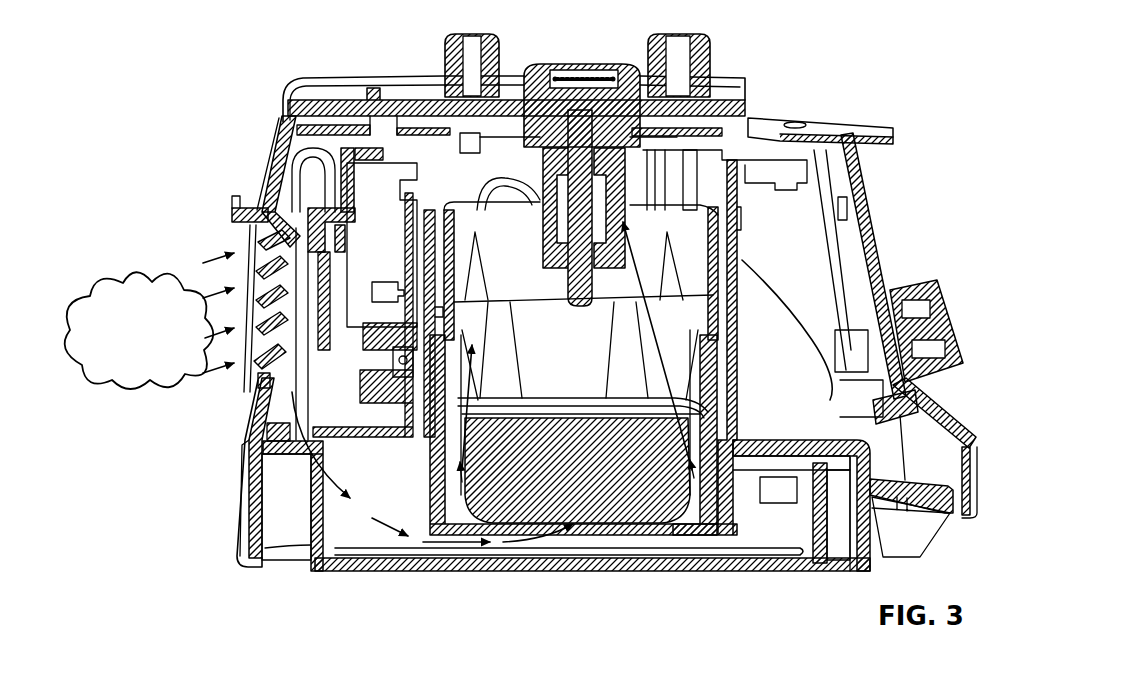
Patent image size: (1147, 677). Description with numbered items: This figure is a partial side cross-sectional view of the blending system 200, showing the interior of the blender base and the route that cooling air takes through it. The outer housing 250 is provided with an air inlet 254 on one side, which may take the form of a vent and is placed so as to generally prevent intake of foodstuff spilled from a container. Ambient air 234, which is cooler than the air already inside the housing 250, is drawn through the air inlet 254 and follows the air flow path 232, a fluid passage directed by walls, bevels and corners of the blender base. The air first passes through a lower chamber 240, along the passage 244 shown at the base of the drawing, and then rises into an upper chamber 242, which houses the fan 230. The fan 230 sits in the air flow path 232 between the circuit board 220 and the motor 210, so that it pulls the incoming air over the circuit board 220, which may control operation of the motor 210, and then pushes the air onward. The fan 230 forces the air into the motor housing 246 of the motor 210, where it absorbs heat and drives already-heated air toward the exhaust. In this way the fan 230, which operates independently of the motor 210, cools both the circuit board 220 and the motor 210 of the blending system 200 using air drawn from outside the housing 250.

The blending system 200 is at (264, 46).
The housing 250 is at (277, 152).
The air inlet 254 is at (256, 230).
The ambient air 234 is at (157, 312).
The motor 210 is at (700, 362).
The air flow path 232 is at (340, 478).
The lower chamber 240 is at (350, 565).
The air channel 244 is at (597, 537).
The upper chamber 242 is at (473, 535).
The fan 230 is at (577, 528).
The circuit board 220 is at (747, 558).
The motor housing 246 is at (700, 362).